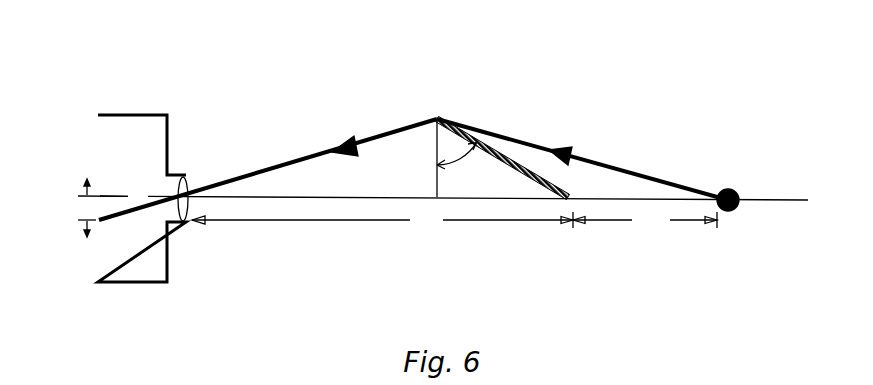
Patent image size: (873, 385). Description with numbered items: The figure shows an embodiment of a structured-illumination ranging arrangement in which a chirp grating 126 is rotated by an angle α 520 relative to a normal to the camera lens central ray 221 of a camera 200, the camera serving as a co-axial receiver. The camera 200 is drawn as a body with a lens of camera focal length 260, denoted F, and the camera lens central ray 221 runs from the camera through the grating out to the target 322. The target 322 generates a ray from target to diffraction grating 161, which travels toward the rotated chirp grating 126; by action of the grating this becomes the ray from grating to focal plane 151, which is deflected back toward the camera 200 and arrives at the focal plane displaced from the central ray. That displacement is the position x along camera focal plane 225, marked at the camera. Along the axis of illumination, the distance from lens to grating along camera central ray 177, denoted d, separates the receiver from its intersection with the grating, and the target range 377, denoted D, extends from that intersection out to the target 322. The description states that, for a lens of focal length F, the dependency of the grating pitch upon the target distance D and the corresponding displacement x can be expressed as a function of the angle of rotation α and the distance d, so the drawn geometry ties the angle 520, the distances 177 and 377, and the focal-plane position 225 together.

The camera 200 is at (160, 115).
The camera focal length 260 is at (117, 193).
The position x along camera focal plane 225 is at (78, 198).
The ray from grating to focal plane 151 is at (272, 168).
The chirp grating 126 is at (520, 167).
The ray from target to diffraction grating 161 is at (598, 159).
The target 322 is at (735, 193).
The camera lens central ray 221 is at (755, 198).
The distance from lens to grating along camera central ray 177 is at (372, 220).
The angle of rotation of the grating 520 is at (472, 148).
The target range 377 is at (617, 220).